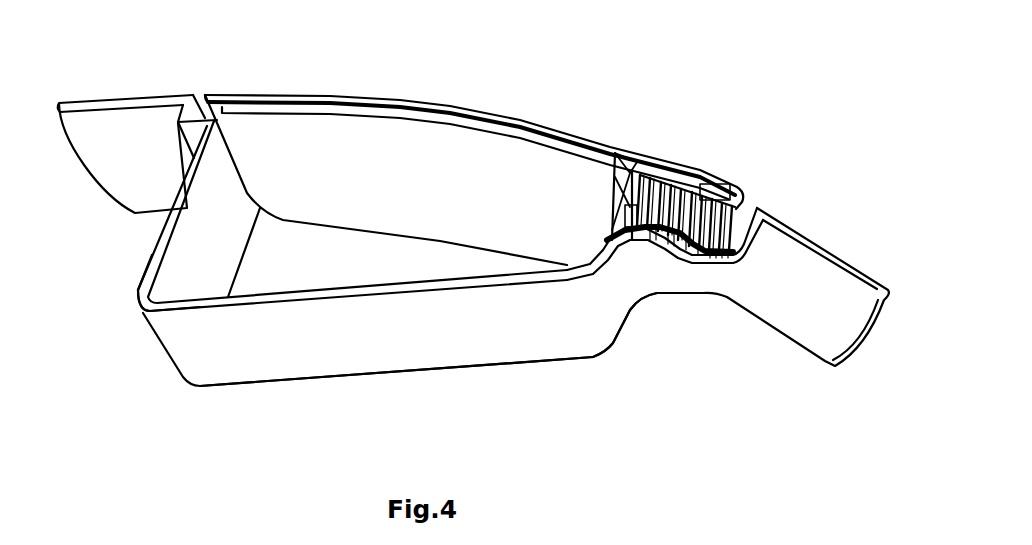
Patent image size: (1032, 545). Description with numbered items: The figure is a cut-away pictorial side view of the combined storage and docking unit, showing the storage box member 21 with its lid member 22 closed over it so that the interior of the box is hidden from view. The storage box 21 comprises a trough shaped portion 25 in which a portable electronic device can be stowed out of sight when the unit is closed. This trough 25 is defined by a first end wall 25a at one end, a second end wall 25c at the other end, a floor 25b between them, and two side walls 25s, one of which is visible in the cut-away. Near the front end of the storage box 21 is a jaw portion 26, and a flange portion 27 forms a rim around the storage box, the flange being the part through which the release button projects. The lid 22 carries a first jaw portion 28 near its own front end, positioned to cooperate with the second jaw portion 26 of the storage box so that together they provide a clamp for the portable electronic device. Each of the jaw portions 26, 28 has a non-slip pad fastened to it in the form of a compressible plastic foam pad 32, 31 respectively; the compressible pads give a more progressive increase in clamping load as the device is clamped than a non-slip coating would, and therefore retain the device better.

The storage box member 21 is at (170, 368).
The lid member 22 is at (447, 107).
The trough shaped portion 25 is at (370, 272).
The first end wall 25a is at (140, 268).
The floor 25b is at (367, 377).
The second end wall 25c is at (613, 345).
The side wall 25s is at (303, 260).
The jaw portion 26 is at (703, 295).
The flange portion 27 is at (108, 195).
The first jaw portion 28 is at (668, 152).
The compressible plastic foam pad 31 is at (636, 162).
The compressible plastic foam pad 32 is at (688, 247).